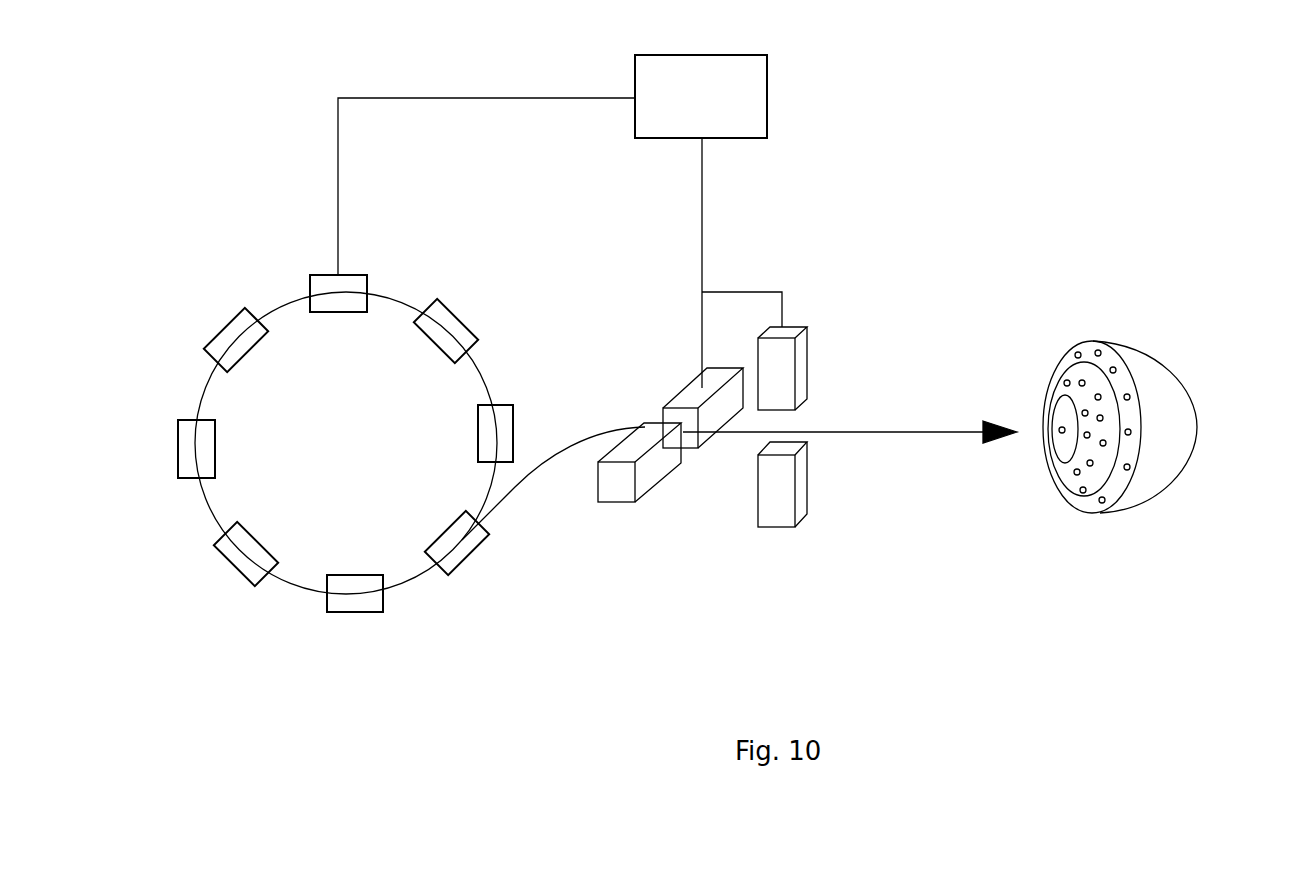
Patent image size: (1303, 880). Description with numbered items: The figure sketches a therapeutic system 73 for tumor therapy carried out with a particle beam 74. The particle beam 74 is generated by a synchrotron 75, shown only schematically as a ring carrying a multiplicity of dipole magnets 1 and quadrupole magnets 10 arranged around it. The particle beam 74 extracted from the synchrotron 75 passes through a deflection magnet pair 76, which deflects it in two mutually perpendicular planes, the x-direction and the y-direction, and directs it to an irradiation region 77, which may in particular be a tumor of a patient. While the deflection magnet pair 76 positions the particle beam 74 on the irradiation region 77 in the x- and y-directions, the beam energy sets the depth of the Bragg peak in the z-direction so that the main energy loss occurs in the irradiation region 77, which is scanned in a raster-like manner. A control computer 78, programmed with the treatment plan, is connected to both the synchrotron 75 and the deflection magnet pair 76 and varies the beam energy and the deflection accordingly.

The dipole magnet 1 is at (222, 330).
The quadrupole magnet 10 is at (338, 274).
The therapeutic system 73 is at (948, 212).
The particle beam 74 is at (895, 435).
The synchrotron 75 is at (229, 290).
The deflection magnet pair 76 is at (702, 550).
The irradiation region 77 is at (1150, 358).
The control computer 78 is at (714, 111).